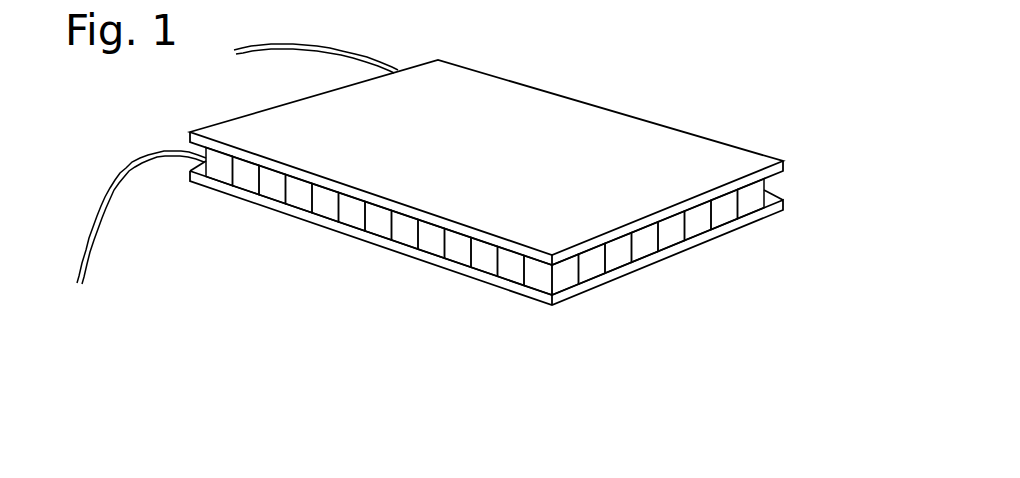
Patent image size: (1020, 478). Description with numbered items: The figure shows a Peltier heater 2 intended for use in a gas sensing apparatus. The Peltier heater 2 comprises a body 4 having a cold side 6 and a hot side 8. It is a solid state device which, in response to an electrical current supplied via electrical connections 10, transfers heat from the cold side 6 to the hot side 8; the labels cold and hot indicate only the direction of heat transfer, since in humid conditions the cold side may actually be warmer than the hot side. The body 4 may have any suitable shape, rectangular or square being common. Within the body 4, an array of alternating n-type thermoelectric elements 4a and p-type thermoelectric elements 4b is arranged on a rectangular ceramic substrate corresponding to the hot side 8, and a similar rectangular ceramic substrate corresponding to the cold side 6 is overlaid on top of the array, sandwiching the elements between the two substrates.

The Peltier heater 2 is at (252, 314).
The body 4 is at (606, 344).
The n-type thermoelectric elements 4a is at (482, 257).
The p-type thermoelectric elements 4b is at (455, 250).
The cold side 6 is at (602, 135).
The hot side 8 is at (377, 249).
The electrical connections 10 is at (118, 177).